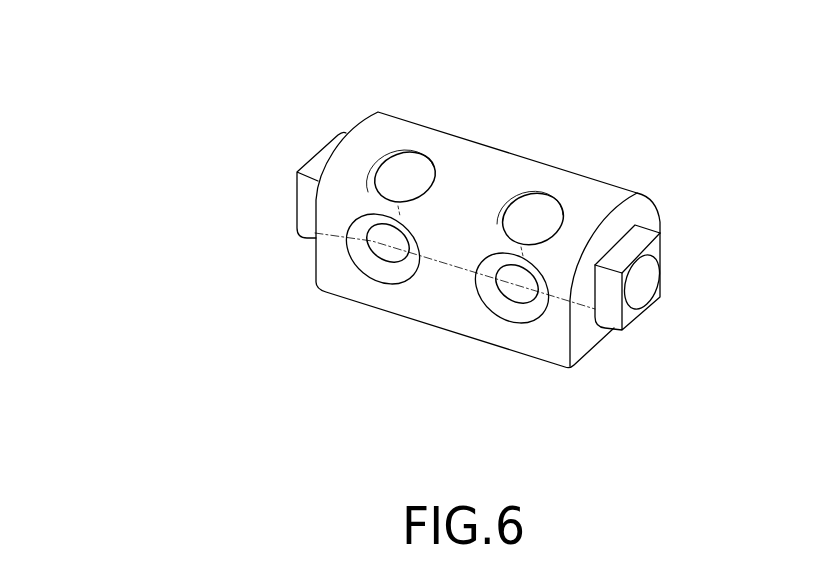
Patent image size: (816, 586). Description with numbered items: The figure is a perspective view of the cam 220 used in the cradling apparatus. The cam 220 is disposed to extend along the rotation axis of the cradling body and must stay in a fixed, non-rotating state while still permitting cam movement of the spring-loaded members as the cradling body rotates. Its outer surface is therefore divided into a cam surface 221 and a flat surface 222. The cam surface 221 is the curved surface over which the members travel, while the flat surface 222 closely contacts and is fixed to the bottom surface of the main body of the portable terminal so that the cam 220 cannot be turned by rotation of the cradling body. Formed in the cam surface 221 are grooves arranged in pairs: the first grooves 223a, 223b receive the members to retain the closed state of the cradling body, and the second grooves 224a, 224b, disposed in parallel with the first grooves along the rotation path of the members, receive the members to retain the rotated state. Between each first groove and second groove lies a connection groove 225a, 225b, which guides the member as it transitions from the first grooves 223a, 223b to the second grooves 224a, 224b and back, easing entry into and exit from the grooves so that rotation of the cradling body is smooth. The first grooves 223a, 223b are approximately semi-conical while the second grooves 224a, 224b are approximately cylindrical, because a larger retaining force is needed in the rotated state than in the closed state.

The cam 220 is at (277, 72).
The cam surface 221 is at (479, 173).
The flat surface 222 is at (600, 349).
The first groove 223a is at (380, 248).
The first groove 223b is at (521, 290).
The second groove 224a is at (399, 168).
The second groove 224b is at (543, 208).
The connection groove 225a is at (316, 277).
The connection groove 225b is at (455, 345).